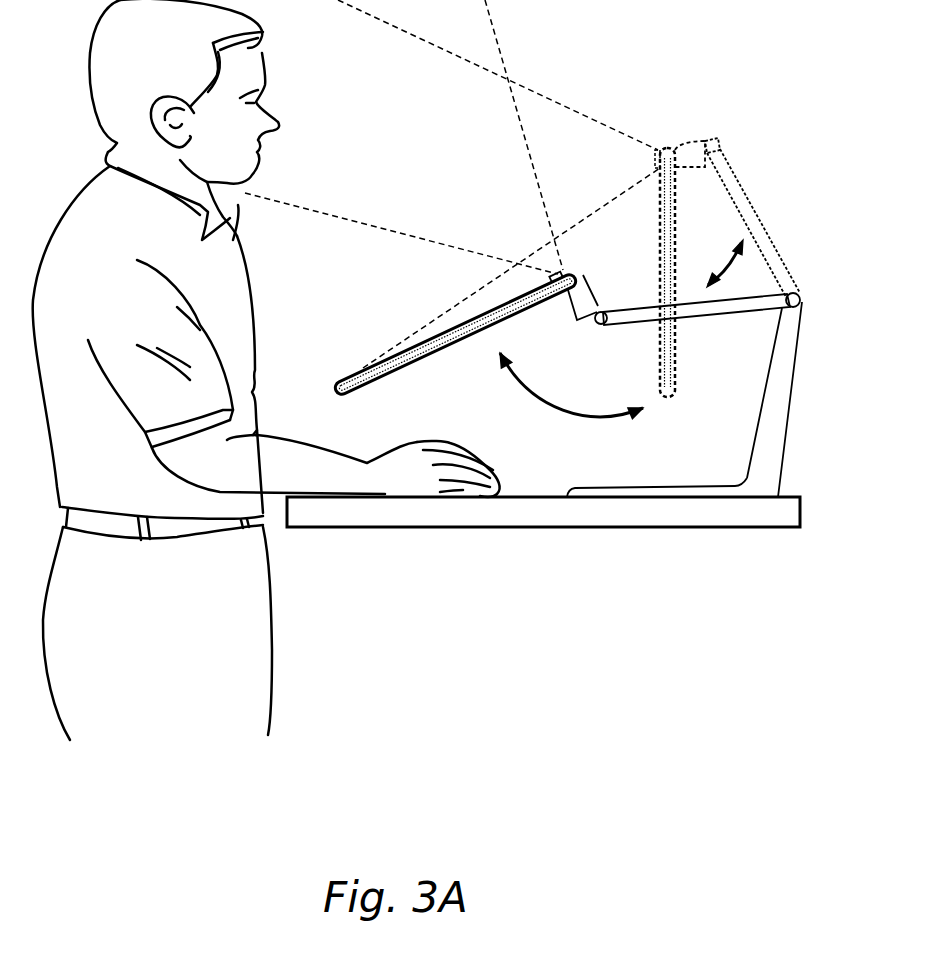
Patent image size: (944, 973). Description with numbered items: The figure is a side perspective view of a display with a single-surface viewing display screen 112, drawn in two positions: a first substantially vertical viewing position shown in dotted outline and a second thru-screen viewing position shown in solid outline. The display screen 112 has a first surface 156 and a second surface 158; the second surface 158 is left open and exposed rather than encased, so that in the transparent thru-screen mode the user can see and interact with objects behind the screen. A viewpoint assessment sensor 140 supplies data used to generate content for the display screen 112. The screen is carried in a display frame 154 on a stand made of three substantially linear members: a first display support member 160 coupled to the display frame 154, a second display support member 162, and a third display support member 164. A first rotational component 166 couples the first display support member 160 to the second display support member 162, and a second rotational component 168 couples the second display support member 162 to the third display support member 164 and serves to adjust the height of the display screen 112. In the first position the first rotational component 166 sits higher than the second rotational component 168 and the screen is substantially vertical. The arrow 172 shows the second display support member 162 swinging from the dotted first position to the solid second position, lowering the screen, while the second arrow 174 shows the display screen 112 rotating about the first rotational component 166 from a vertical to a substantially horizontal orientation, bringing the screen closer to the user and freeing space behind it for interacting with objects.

The display screen 112 is at (488, 308).
The viewpoint assessment sensor 140 is at (563, 268).
The display frame 154 is at (325, 389).
The first surface 156 is at (430, 334).
The second surface 158 is at (418, 362).
The first display support member 160 is at (693, 148).
The second display support member 162 is at (770, 250).
The third display support member 164 is at (763, 450).
The first rotational component 166 is at (718, 140).
The second rotational component 168 is at (800, 305).
The arrow 172 is at (708, 268).
The second arrow 174 is at (565, 417).